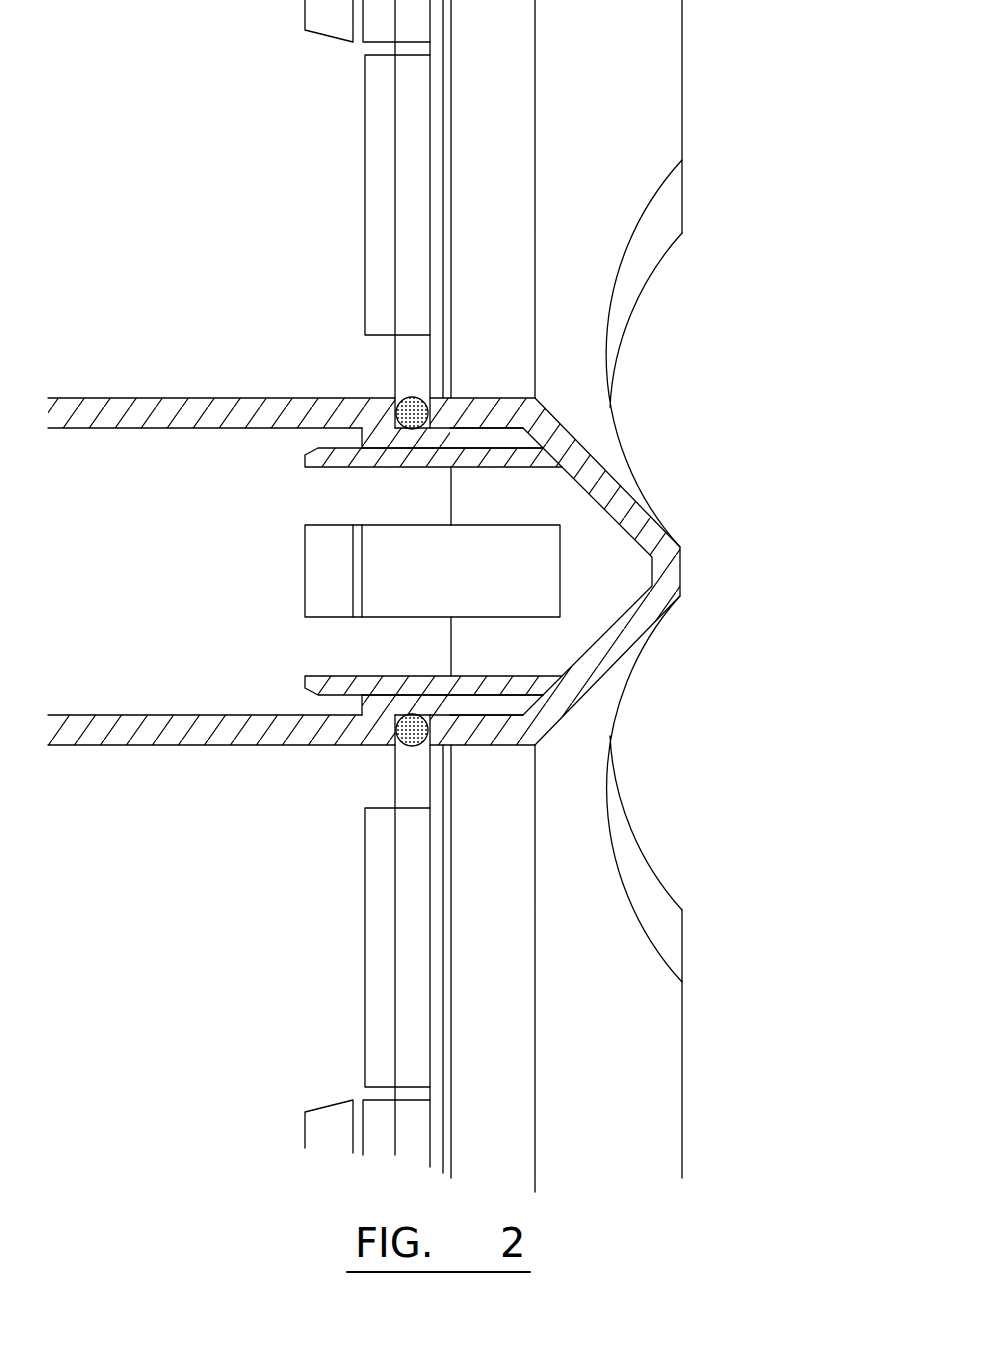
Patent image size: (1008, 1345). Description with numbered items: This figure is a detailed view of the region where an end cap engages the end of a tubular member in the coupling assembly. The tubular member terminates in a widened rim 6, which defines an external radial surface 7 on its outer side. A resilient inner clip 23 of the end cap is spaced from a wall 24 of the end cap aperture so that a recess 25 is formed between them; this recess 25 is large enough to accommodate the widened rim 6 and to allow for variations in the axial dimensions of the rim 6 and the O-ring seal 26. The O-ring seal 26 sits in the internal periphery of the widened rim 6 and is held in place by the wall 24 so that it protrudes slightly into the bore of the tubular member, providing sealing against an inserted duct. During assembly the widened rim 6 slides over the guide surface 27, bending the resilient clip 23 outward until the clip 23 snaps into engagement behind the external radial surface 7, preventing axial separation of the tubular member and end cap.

The widened rim 6 is at (408, 443).
The external radial surface 7 is at (350, 420).
The resilient inner clip 23 is at (320, 567).
The wall 24 is at (472, 408).
The recess 25 is at (520, 443).
The O-ring seal 26 is at (400, 395).
The guide surface 27 is at (360, 432).